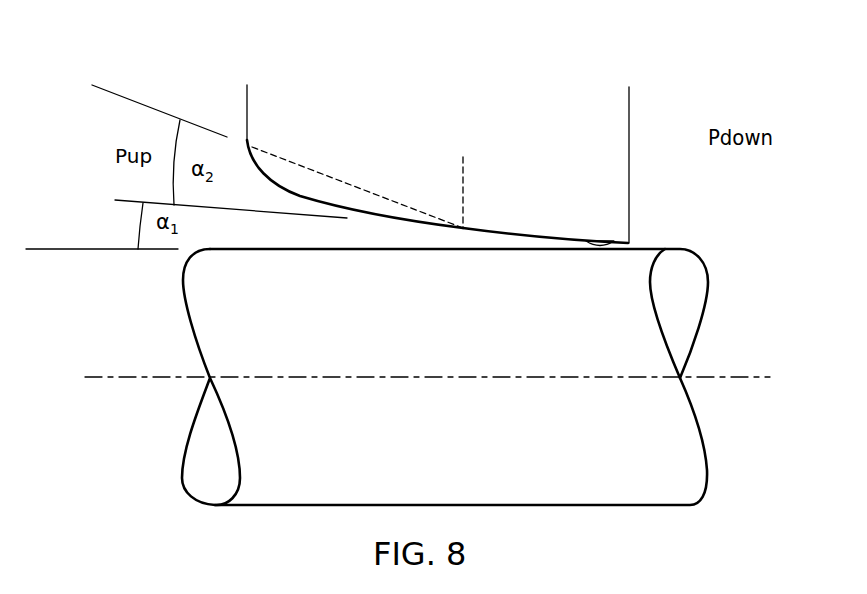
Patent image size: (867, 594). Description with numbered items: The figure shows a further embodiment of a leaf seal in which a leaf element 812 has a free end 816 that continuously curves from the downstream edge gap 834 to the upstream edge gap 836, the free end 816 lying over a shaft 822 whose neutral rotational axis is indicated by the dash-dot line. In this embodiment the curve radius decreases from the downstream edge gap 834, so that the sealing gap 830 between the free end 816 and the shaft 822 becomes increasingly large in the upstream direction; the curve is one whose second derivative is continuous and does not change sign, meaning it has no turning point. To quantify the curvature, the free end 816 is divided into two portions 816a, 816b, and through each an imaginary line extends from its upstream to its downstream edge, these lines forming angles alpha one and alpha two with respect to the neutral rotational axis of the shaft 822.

The leaf element 812 is at (587, 80).
The free end 816 is at (438, 131).
The flat portion of pressure pad 816a is at (629, 142).
The curved portion of pressure pad 816b is at (463, 142).
The shaft 822 is at (467, 348).
The sealing gap 830 is at (420, 236).
The downstream edge gap 834 is at (617, 238).
The upstream edge gap 836 is at (248, 187).